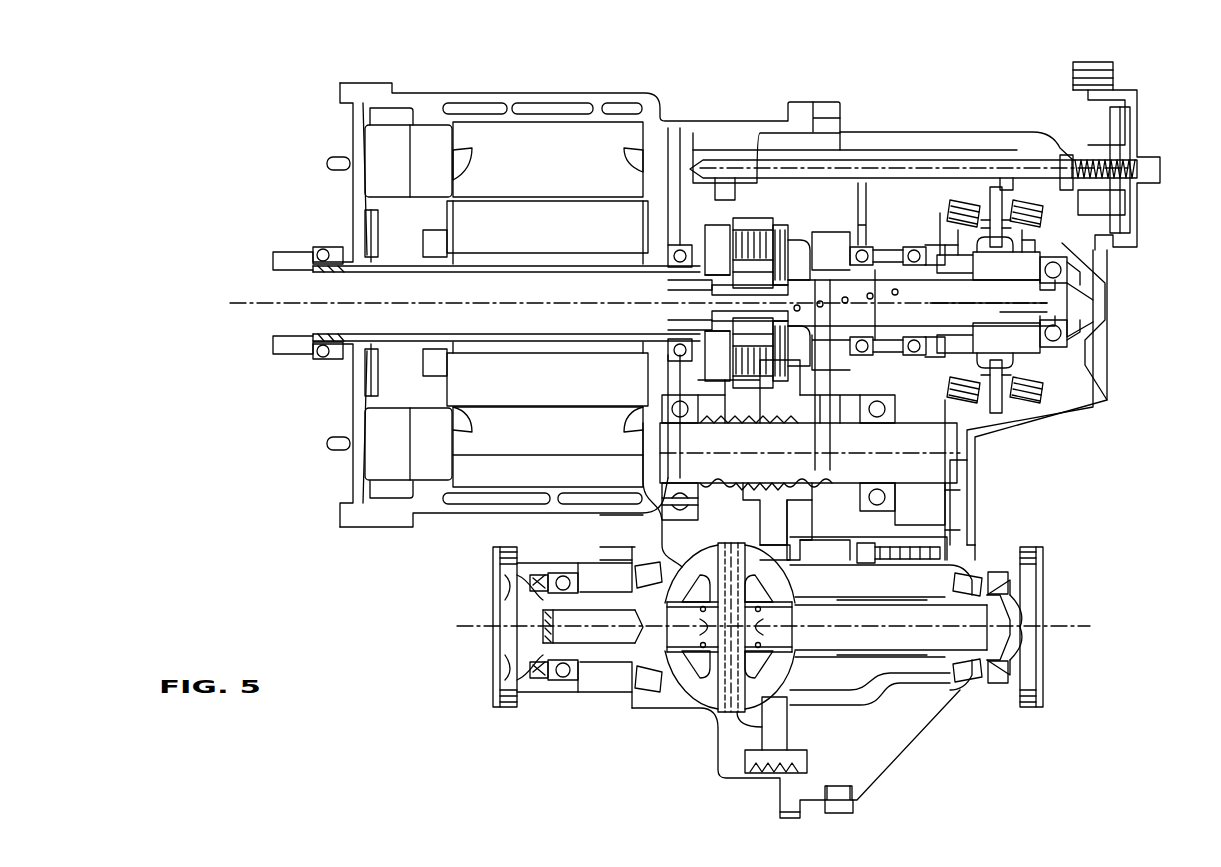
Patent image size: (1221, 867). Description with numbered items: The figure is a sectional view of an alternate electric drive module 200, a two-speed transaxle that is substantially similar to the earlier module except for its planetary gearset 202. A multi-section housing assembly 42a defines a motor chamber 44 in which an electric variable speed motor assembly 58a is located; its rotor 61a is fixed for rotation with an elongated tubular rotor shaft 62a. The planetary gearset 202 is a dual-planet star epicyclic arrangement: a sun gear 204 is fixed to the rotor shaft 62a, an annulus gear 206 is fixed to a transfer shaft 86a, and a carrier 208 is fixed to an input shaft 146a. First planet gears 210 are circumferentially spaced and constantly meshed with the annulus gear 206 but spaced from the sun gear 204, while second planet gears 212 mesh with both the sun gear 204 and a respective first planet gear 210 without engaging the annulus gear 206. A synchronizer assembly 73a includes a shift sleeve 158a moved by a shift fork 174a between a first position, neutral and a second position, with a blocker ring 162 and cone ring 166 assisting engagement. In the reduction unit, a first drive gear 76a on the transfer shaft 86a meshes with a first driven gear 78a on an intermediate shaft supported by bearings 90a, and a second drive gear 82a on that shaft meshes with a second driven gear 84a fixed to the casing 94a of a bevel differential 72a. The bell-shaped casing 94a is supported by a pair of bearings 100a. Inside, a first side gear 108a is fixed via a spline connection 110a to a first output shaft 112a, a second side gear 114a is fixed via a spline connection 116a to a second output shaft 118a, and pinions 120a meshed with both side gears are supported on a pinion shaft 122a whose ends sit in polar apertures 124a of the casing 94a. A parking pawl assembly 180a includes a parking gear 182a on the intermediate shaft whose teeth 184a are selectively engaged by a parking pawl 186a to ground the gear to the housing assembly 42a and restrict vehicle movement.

The electric drive module 200 is at (927, 85).
The cone ring 166 is at (1025, 205).
The housing assembly 42a is at (860, 135).
The synchronizer assembly 73a is at (958, 185).
The planetary gearset 202 is at (719, 185).
The electric variable speed motor assembly 58a is at (360, 136).
The rotor 61a is at (540, 215).
The motor chamber 44 is at (418, 228).
The first planet gears 210 is at (703, 223).
The annulus gear 206 is at (740, 228).
The first drive gear 76a is at (836, 236).
The transfer shaft 86a is at (895, 290).
The input shaft 146a is at (905, 295).
The blocker ring 162 is at (1030, 238).
The rotor shaft 62a is at (518, 262).
The sun gear 204 is at (740, 275).
The carrier 208 is at (773, 278).
The second planet gears 212 is at (703, 380).
The second drive gear 82a is at (767, 425).
The shift sleeve 158a is at (1035, 355).
The shift fork 174a is at (1005, 410).
The pinions 120a is at (707, 548).
The second driven gear 84a is at (790, 488).
The parking gear 182a is at (950, 493).
The parking pawl assembly 180a is at (955, 508).
The bearings 90a is at (672, 500).
The bearings 100a is at (640, 572).
The casing 94a is at (684, 565).
The polar apertures 124a is at (732, 572).
The teeth 184a is at (950, 545).
The parking pawl 186a is at (975, 548).
The first driven gear 78a is at (826, 538).
The spline connection 116a is at (790, 610).
The second side gear 114a is at (782, 652).
The spline connection 110a is at (685, 662).
The first output shaft 112a is at (518, 700).
The bevel differential 72a is at (664, 722).
The first side gear 108a is at (682, 630).
The pinion shaft 122a is at (728, 692).
The second output shaft 118a is at (1010, 692).